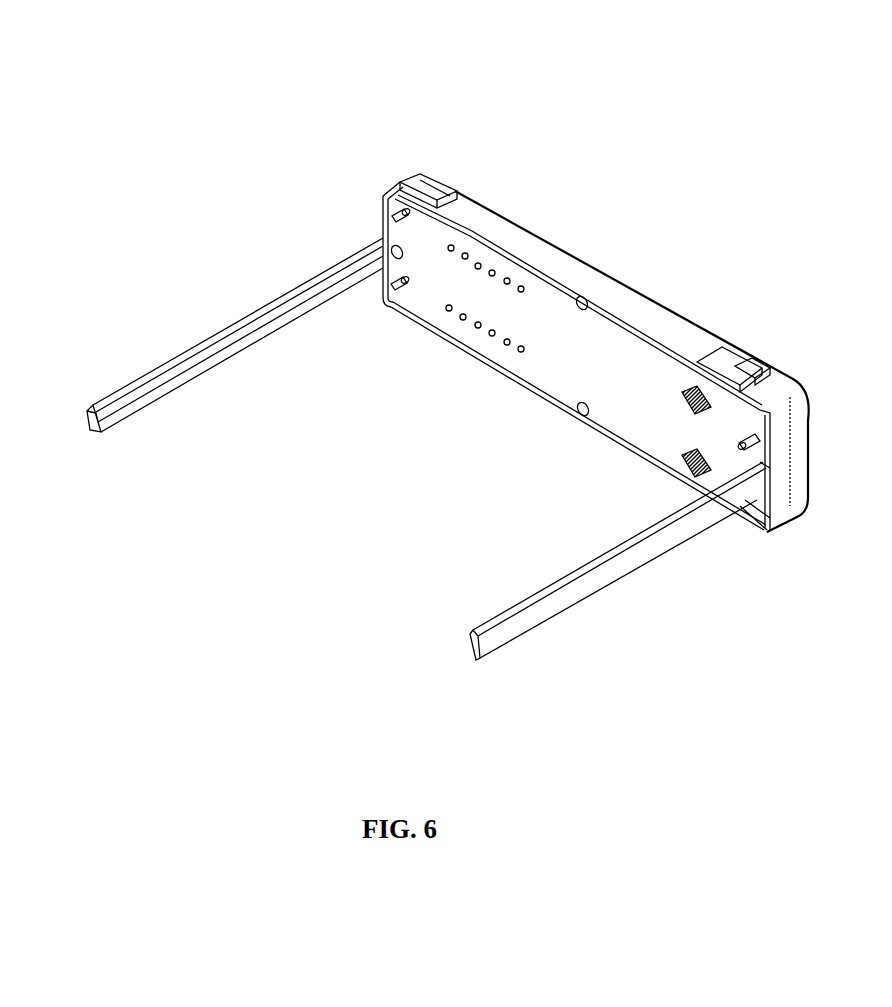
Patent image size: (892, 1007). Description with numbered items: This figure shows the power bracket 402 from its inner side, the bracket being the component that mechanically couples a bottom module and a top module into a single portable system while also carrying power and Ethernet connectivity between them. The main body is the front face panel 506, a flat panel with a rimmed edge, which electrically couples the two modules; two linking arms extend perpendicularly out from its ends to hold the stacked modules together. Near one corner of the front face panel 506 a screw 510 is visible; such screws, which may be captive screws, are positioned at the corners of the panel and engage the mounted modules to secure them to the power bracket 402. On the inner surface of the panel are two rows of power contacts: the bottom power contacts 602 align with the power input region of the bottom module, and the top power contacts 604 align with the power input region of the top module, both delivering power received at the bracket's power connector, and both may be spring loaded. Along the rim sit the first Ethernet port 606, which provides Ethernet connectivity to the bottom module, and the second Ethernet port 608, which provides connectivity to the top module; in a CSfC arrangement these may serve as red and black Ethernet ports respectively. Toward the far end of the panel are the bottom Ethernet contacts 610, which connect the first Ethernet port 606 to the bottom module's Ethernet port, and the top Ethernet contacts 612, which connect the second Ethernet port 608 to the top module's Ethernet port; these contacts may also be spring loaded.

The power bracket 402 is at (352, 94).
The front face panel 506 is at (603, 273).
The screw 510 is at (388, 210).
The bottom power contacts 602 is at (447, 308).
The top power contacts 604 is at (494, 273).
The first Ethernet port 606 is at (727, 353).
The second Ethernet port 608 is at (468, 213).
The bottom Ethernet contacts 610 is at (682, 458).
The top Ethernet contacts 612 is at (680, 393).